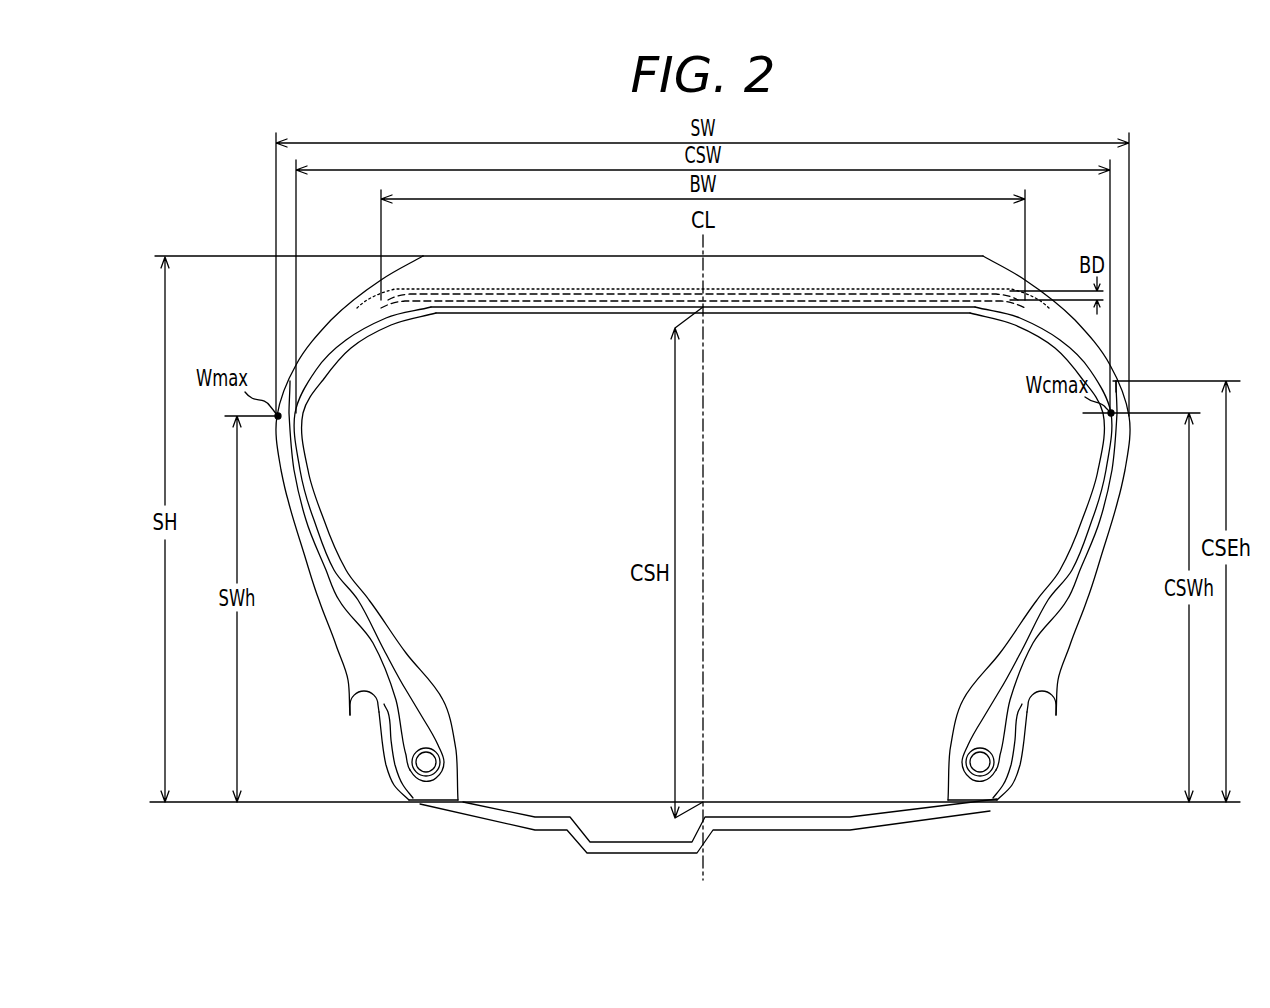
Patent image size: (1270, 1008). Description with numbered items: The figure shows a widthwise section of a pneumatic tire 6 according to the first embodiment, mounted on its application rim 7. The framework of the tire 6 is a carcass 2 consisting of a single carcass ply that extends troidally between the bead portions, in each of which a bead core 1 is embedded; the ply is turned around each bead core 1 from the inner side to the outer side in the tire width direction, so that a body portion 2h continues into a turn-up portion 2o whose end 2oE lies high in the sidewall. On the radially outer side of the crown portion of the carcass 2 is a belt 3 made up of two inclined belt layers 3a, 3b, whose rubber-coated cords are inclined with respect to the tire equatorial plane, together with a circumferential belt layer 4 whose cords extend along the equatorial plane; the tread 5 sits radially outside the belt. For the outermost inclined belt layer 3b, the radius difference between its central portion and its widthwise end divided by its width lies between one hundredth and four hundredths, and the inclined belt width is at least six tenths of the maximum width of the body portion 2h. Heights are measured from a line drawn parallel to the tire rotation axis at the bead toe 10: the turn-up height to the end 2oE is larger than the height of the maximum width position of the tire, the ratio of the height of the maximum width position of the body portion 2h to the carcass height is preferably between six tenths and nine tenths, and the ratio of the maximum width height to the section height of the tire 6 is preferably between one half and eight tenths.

The bead core 1 is at (433, 764).
The carcass 2 is at (748, 553).
The body portion of carcass ply 2h is at (1073, 572).
The turn-up portion of carcass ply 2o is at (1063, 615).
The end of turn-up portion 2oE is at (1116, 381).
The belt 3 is at (703, 356).
The inclined belt layer 3a is at (979, 302).
The inclined belt layer (outermost layer) 3b is at (1010, 295).
The circumferential belt layer 4 is at (891, 288).
The tread 5 is at (551, 256).
The tire 6 is at (260, 312).
The rim 7 is at (1027, 731).
The bead toe 10 is at (466, 800).